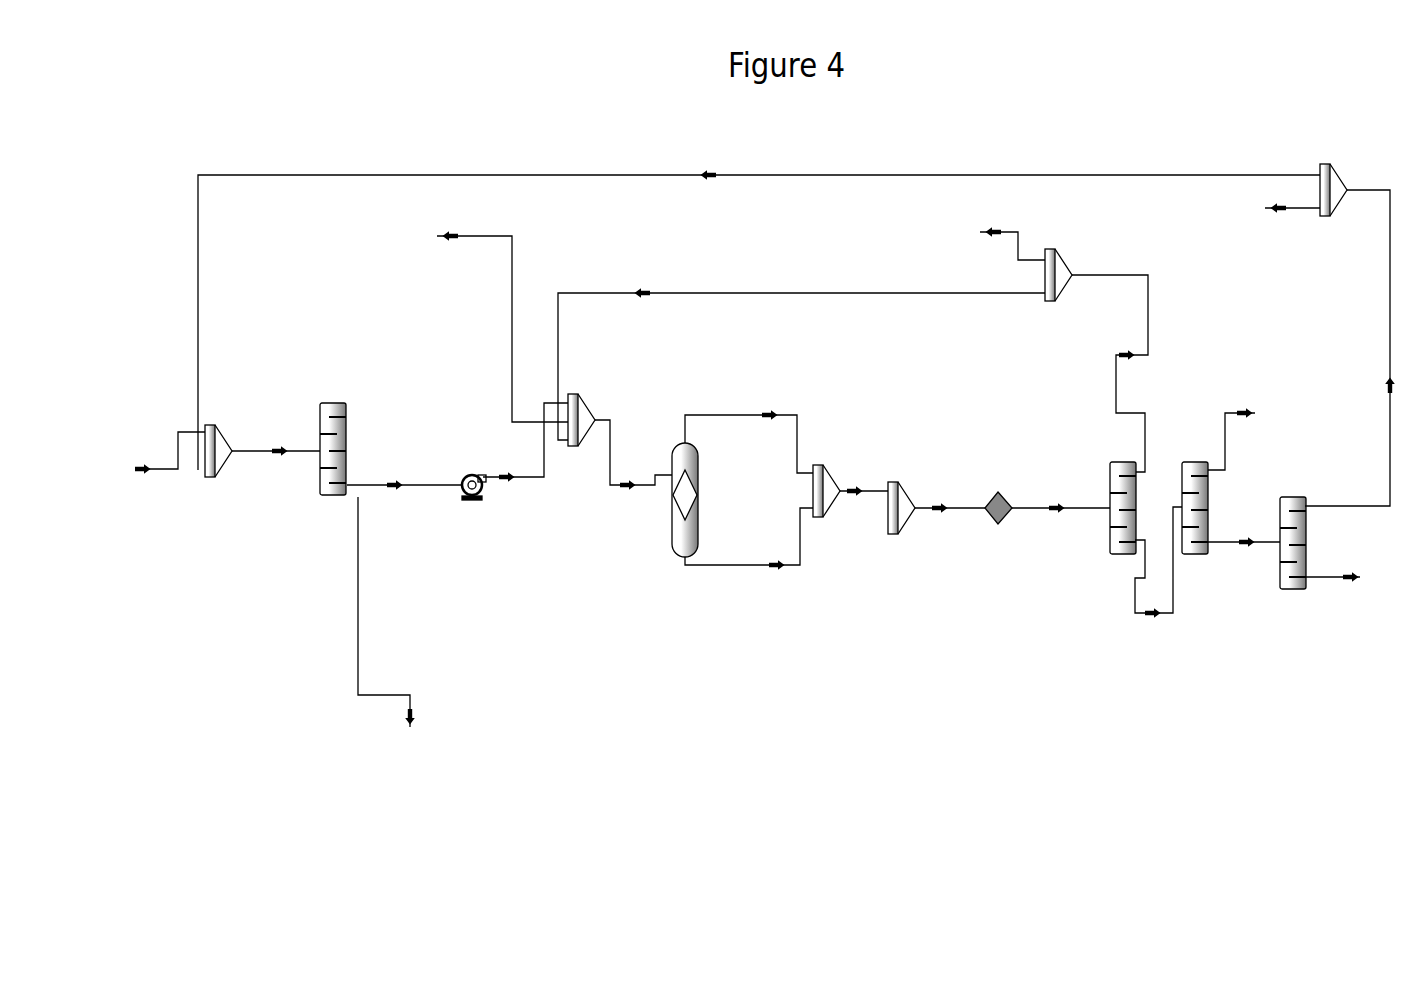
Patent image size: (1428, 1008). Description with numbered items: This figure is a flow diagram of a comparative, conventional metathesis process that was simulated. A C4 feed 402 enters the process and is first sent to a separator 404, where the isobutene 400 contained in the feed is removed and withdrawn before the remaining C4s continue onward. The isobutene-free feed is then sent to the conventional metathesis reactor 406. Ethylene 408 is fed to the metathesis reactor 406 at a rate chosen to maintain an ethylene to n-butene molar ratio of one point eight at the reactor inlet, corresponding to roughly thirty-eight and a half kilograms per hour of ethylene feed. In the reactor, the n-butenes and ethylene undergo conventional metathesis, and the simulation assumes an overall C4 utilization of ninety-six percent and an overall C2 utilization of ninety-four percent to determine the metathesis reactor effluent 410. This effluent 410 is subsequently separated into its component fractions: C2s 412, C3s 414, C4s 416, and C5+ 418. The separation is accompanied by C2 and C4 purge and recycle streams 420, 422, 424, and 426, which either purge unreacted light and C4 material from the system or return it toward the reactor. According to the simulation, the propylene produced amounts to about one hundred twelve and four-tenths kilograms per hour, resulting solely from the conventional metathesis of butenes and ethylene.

The isobutene 400 is at (386, 612).
The C4 feed 402 is at (225, 465).
The separator 404 is at (371, 436).
The conventional metathesis reactor 406 is at (742, 490).
The ethylene 408 is at (502, 326).
The metathesis reactor effluent 410 is at (1012, 498).
The C2s 412 is at (1127, 446).
The C3s 414 is at (1231, 466).
The C4s 416 is at (1341, 389).
The C5+ 418 is at (1352, 591).
The C2 purge stream 420 is at (1021, 264).
The C2 recycle stream 422 is at (801, 350).
The C4 purge stream 424 is at (1302, 205).
The C4 recycle stream 426 is at (759, 308).